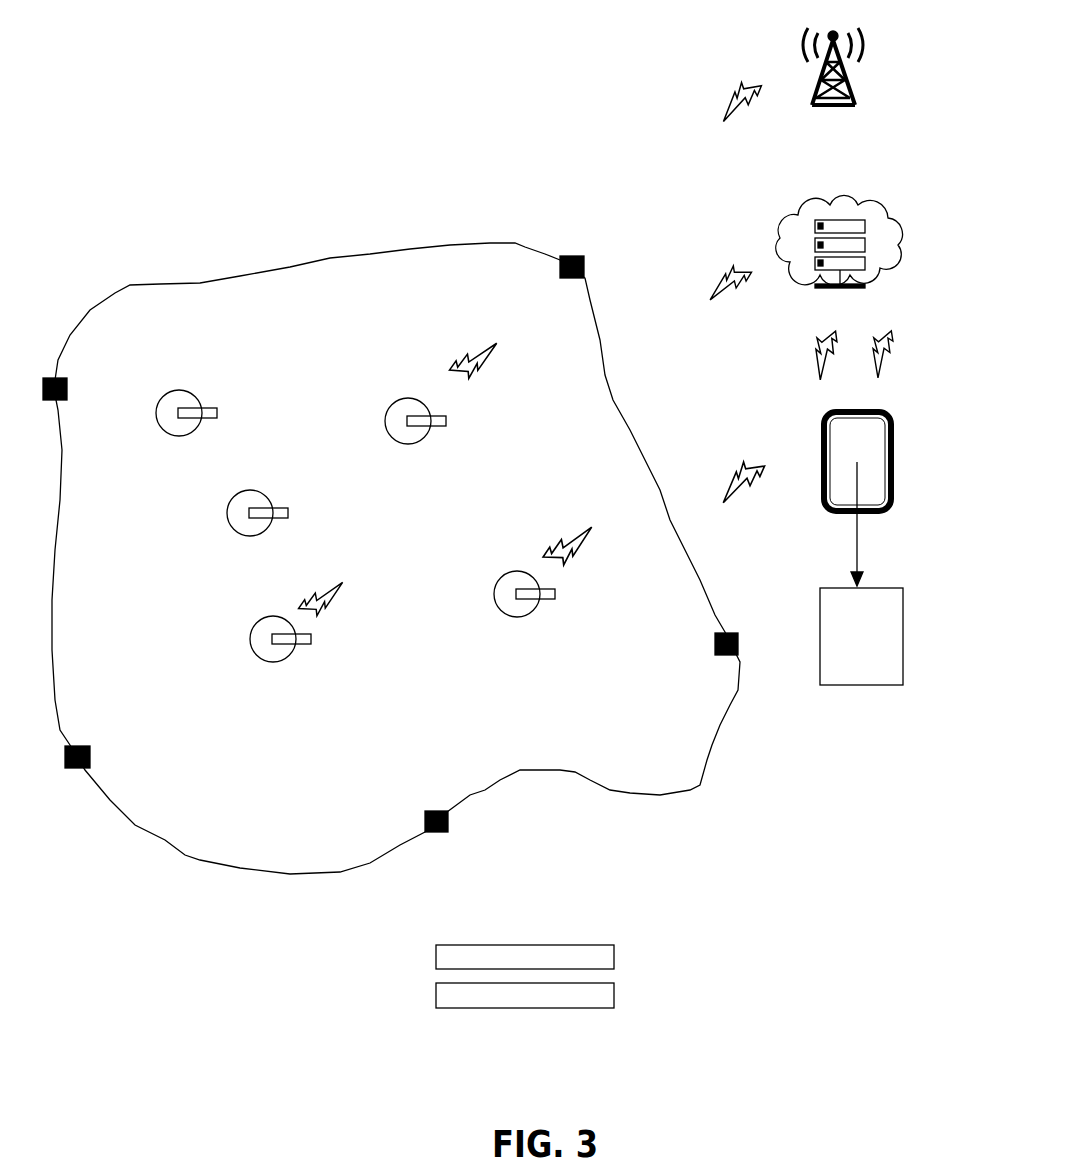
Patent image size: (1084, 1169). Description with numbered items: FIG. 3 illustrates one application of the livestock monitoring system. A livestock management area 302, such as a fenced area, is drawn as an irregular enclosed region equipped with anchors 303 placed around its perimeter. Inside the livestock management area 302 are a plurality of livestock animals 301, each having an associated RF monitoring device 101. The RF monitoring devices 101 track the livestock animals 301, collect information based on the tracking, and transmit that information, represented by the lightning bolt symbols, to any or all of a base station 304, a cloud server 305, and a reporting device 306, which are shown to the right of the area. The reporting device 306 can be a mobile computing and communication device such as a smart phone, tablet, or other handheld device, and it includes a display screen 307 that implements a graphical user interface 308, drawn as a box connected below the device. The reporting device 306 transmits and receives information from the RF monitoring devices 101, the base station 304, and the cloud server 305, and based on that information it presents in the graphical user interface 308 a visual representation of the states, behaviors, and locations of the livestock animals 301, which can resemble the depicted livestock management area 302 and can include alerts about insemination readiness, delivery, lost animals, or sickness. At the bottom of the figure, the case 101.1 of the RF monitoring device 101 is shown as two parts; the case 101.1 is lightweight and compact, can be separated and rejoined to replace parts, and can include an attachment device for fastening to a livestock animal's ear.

The RF monitoring device 101 is at (447, 420).
The case 101.1 is at (660, 948).
The livestock animal 301 is at (442, 387).
The livestock management area 302 is at (200, 283).
The anchor 303 is at (580, 258).
The base station 304 is at (800, 80).
The cloud server 305 is at (778, 240).
The reporting device 306 is at (848, 438).
The display screen 307 is at (862, 450).
The graphical user interface 308 is at (845, 674).